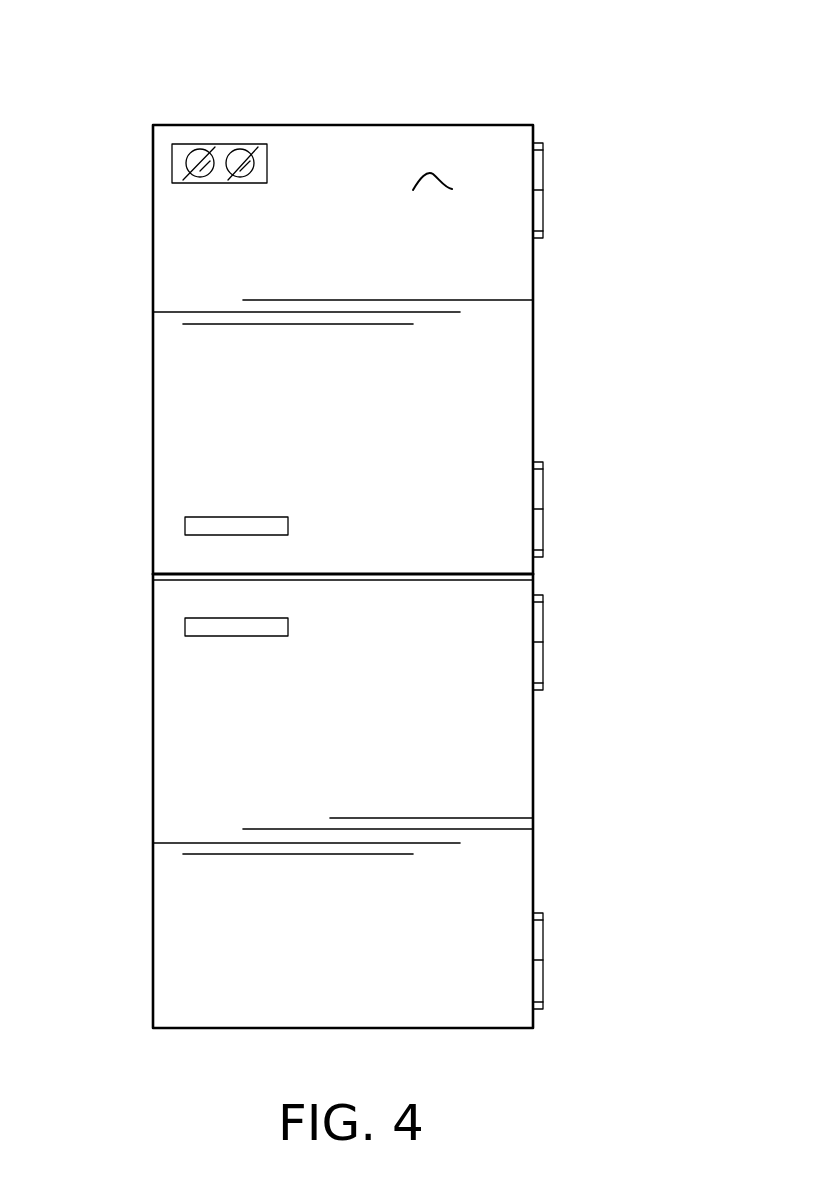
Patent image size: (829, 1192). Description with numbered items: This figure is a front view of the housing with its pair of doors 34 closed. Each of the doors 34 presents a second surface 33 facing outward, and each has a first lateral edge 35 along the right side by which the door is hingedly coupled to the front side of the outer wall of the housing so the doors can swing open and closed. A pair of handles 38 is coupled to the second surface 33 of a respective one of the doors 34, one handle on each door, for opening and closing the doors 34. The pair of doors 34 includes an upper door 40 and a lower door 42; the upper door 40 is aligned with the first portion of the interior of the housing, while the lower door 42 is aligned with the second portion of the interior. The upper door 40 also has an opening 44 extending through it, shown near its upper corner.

The second surface 33 is at (468, 172).
The doors 34 is at (322, 160).
The first lateral edge 35 is at (533, 362).
The handles 38 is at (200, 617).
The upper door 40 is at (200, 252).
The lower door 42 is at (213, 879).
The opening 44 is at (205, 143).